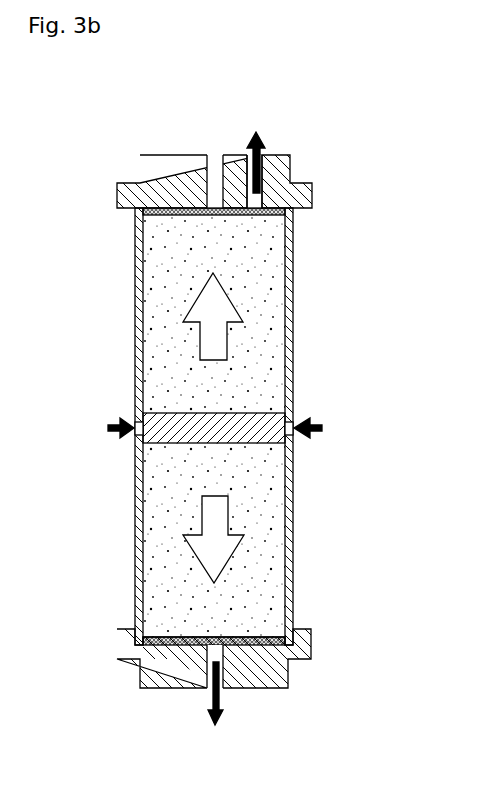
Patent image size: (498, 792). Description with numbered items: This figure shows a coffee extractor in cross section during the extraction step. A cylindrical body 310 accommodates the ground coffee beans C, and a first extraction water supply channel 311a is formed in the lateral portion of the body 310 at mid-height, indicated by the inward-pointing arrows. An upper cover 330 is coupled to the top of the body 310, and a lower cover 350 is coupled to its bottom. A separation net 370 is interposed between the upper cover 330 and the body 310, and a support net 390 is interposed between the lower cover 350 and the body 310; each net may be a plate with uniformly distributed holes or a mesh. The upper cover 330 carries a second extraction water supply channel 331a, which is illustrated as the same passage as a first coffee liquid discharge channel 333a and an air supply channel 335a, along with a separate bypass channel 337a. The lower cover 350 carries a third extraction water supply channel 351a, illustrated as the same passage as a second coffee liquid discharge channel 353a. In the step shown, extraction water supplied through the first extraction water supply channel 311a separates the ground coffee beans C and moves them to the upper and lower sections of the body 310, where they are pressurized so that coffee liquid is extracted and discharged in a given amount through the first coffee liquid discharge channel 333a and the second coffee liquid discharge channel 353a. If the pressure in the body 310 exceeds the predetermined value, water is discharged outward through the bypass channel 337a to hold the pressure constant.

The upper cover 330 is at (155, 158).
The bypass channel 337a is at (216, 171).
The second extraction water supply channel 331a is at (253, 197).
The first coffee liquid discharge channel 333a is at (256, 162).
The air supply channel 335a is at (254, 181).
The body 310 is at (137, 320).
The separation net 370 is at (177, 217).
The ground coffee beans C is at (167, 376).
The first extraction water supply channel 311a is at (137, 423).
The lower cover 350 is at (165, 680).
The support net 390 is at (167, 637).
The third extraction water supply channel 351a is at (218, 657).
The second coffee liquid discharge channel 353a is at (215, 693).